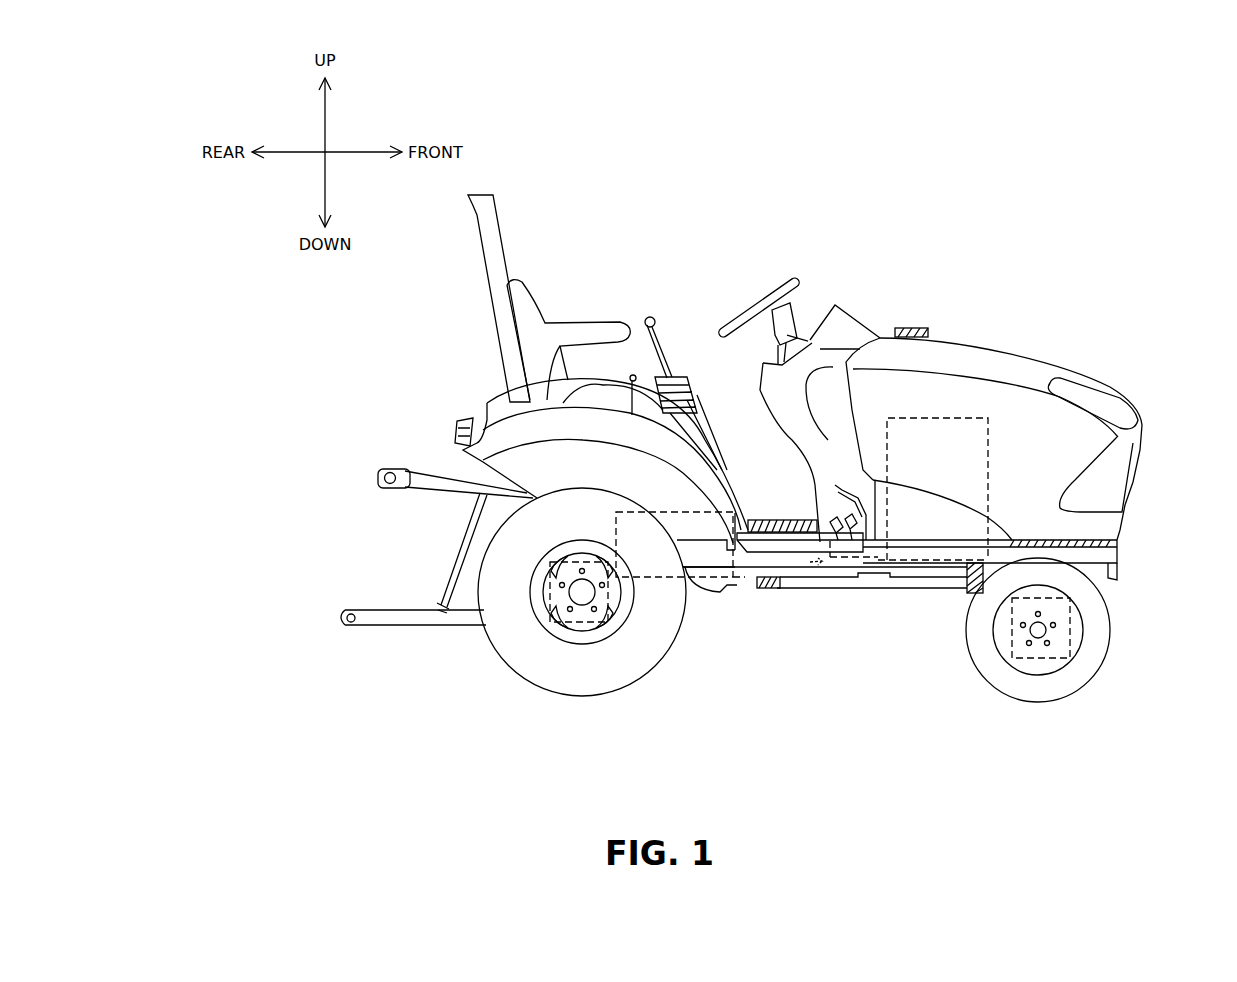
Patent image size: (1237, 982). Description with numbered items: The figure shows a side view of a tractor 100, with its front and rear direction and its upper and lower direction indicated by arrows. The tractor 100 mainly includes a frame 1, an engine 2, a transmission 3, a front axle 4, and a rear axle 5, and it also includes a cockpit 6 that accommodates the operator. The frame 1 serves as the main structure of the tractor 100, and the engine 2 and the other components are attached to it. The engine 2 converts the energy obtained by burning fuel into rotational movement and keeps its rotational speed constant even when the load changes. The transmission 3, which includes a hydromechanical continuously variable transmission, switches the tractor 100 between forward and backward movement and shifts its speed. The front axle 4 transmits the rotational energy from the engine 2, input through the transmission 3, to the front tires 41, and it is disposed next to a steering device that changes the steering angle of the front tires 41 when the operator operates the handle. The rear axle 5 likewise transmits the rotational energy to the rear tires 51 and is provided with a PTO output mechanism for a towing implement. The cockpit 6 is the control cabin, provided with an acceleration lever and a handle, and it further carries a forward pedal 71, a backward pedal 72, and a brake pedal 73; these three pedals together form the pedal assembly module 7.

The tractor 100 is at (1158, 207).
The frame 1 is at (1120, 556).
The engine 2 is at (962, 406).
The transmission 3 is at (657, 582).
The front axle 4 is at (1063, 657).
The front tires 41 is at (997, 680).
The rear axle 5 is at (598, 632).
The rear tires 51 is at (532, 670).
The cockpit 6 is at (668, 252).
The pedal assembly module 7 is at (799, 595).
The forward pedal 71 is at (848, 514).
The backward pedal 72 is at (833, 519).
The brake pedal 73 is at (840, 488).